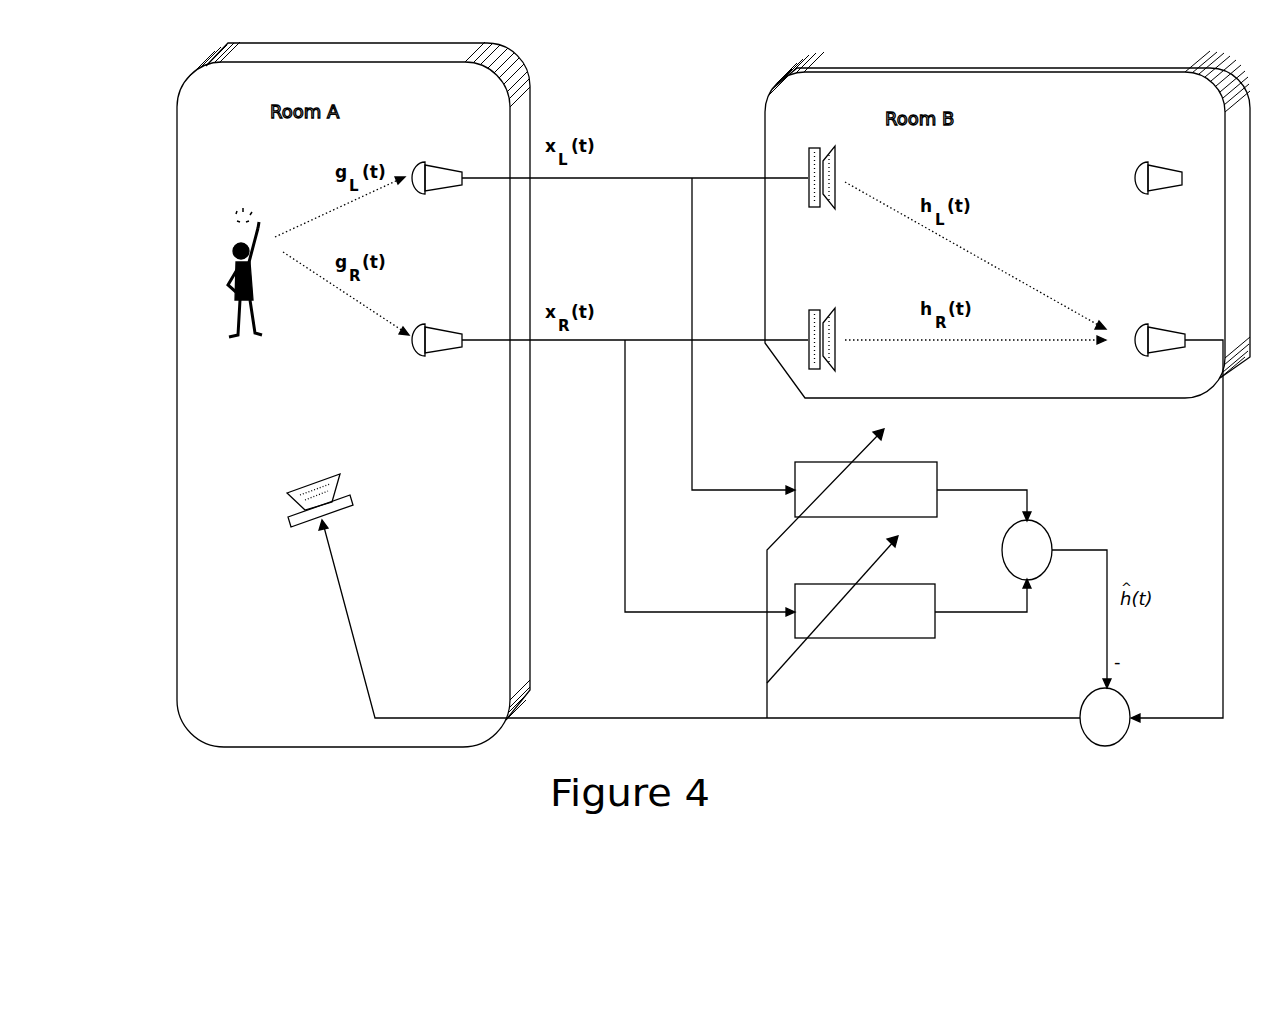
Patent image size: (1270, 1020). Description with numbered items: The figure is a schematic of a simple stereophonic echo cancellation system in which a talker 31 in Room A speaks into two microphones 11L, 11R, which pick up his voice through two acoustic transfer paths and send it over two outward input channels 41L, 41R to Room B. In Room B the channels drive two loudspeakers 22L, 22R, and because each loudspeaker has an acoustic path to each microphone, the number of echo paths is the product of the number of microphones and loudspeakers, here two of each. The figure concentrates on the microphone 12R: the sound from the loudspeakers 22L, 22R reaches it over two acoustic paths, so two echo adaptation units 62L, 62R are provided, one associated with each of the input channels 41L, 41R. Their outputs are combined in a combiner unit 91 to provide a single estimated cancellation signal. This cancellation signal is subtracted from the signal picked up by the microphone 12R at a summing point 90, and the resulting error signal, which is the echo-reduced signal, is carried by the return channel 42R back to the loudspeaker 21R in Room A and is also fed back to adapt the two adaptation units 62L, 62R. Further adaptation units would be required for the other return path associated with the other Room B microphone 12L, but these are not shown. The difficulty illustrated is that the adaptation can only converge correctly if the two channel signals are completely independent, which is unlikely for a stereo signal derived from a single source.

The left microphone in Room A 11L is at (437, 163).
The right microphone in Room A 11R is at (437, 370).
The left microphone in Room B 12L is at (1158, 157).
The right microphone in Room B 12R is at (1176, 505).
The right loudspeaker in Room A 21R is at (343, 510).
The left loudspeaker in Room B 22L is at (817, 158).
The right loudspeaker in Room B 22R is at (811, 322).
The talker 31 is at (246, 284).
The left outward channel 41L is at (635, 314).
The right outward channel 41R is at (635, 458).
The right return channel 42R is at (699, 619).
The left echo adaptation unit 62L is at (899, 573).
The right echo adaptation unit 62R is at (899, 609).
The subtractor / error summing node 90 is at (1108, 746).
The combiner unit 91 is at (1056, 595).